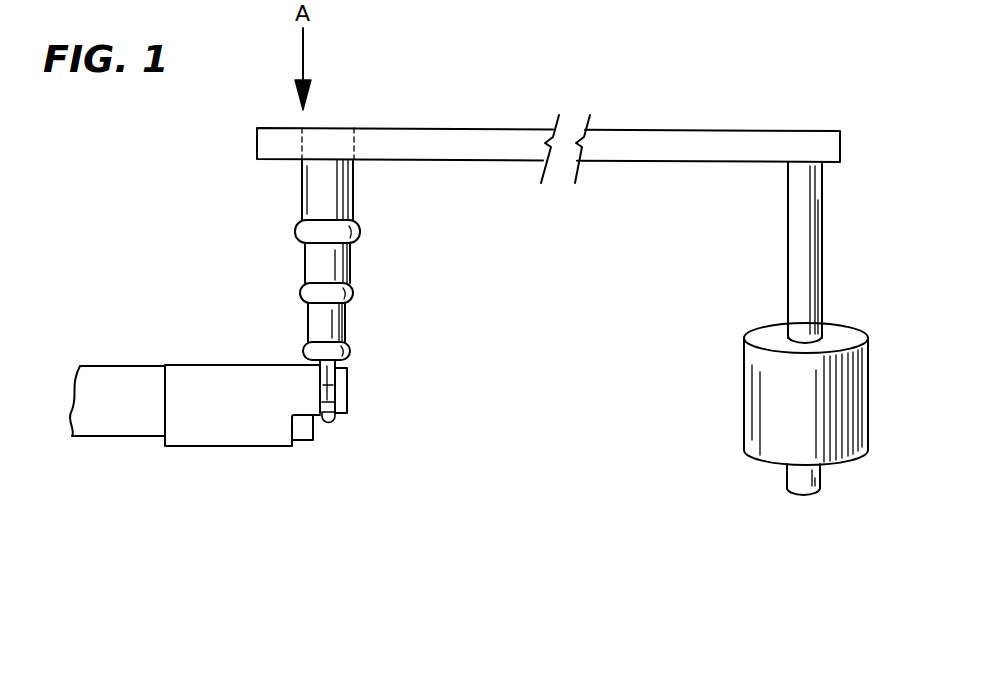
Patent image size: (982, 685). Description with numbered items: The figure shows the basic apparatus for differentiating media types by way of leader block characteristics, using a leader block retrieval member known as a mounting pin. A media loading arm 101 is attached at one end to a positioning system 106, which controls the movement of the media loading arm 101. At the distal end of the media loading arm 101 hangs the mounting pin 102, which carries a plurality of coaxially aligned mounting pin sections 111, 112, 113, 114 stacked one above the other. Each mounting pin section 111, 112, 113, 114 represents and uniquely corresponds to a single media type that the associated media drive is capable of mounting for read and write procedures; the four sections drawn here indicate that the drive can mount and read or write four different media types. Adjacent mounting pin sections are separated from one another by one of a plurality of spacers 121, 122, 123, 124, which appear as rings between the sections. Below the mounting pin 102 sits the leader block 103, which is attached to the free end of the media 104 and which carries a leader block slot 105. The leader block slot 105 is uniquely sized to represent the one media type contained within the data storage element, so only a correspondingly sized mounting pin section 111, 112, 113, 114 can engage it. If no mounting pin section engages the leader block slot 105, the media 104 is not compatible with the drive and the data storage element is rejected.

The media loading arm 101 is at (493, 133).
The mounting pin 102 is at (297, 193).
The leader block 103 is at (233, 433).
The media 104 is at (128, 375).
The leader block slot 105 is at (335, 420).
The positioning system 106 is at (768, 450).
The mounting pin section 111 is at (347, 380).
The mounting pin section 112 is at (345, 320).
The mounting pin section 113 is at (351, 263).
The mounting pin section 114 is at (353, 193).
The spacer 121 is at (348, 405).
The spacer 122 is at (350, 350).
The spacer 123 is at (353, 293).
The spacer 124 is at (360, 232).